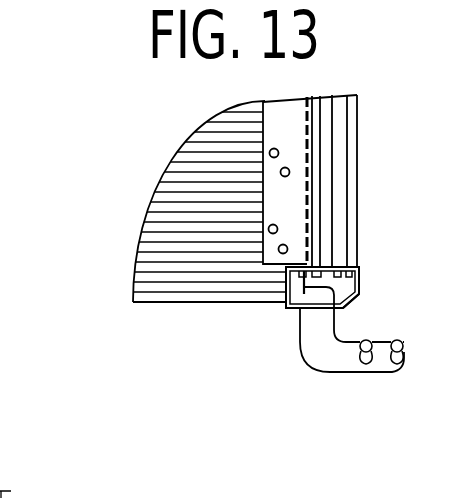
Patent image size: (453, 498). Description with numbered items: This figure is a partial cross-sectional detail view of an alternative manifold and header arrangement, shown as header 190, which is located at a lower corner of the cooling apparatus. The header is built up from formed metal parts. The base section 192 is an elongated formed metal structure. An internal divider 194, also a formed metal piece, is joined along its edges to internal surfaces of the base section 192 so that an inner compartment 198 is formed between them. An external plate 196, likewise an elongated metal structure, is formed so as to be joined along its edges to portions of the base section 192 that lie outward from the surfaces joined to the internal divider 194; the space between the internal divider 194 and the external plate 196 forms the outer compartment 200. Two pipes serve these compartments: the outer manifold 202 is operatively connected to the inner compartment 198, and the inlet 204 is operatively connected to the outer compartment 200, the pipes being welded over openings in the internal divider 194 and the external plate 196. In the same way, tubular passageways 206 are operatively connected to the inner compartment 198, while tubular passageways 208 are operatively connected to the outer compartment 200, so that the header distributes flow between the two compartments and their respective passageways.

The header 190 is at (361, 271).
The base section 192 is at (352, 267).
The internal divider 194 is at (322, 281).
The external plate 196 is at (345, 309).
The inner compartment 198 is at (303, 283).
The outer compartment 200 is at (360, 290).
The outer manifold 202 is at (327, 373).
The inlet 204 is at (390, 373).
The tubular passageways 206 is at (336, 171).
The tubular passageways 208 is at (354, 202).